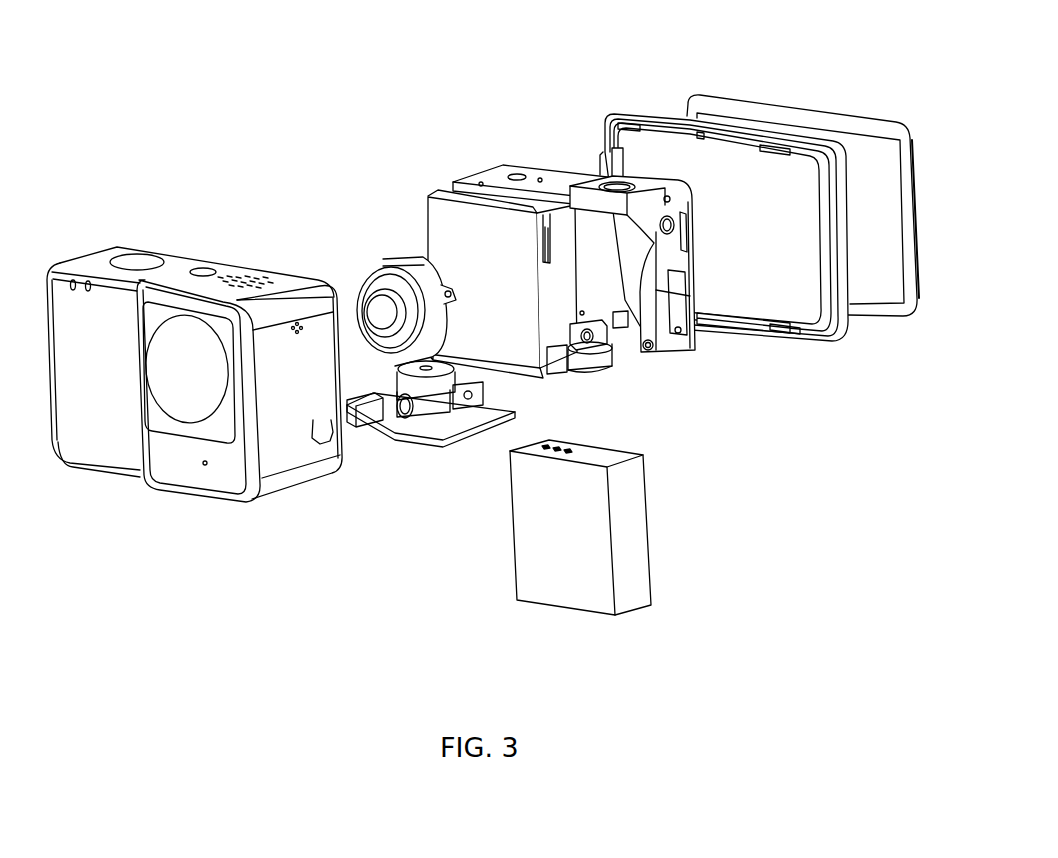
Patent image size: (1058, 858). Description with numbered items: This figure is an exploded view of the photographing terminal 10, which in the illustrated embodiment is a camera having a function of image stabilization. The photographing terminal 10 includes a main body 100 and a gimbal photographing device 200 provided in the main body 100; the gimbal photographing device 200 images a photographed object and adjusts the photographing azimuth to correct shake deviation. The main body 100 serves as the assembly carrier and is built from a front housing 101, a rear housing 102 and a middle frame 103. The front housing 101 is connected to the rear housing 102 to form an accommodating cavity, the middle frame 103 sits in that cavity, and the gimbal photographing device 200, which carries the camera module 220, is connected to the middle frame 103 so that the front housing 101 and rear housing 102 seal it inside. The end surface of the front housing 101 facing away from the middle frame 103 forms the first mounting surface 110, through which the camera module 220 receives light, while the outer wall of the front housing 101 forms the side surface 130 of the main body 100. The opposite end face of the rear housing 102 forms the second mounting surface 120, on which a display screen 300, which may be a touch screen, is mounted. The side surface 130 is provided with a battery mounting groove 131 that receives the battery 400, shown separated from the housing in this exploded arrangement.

The photographing terminal 10 is at (192, 134).
The main body 100 is at (629, 112).
The front housing 101 is at (176, 450).
The rear housing 102 is at (818, 340).
The middle frame 103 is at (497, 230).
The first mounting surface 110 is at (108, 440).
The second mounting surface 120 is at (683, 118).
The side surface 130 is at (275, 450).
The battery mounting groove 131 is at (327, 447).
The gimbal photographing device 200 is at (373, 262).
The camera module 220 is at (373, 310).
The display screen 300 is at (816, 112).
The battery 400 is at (626, 563).